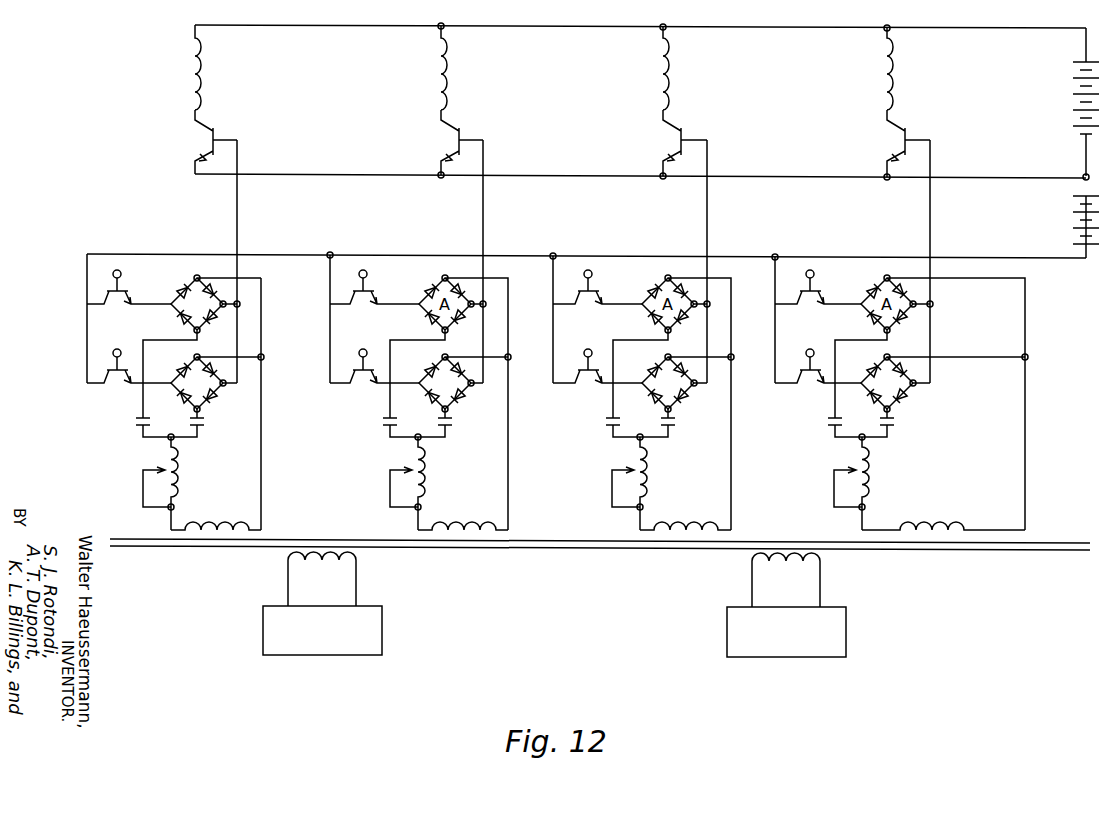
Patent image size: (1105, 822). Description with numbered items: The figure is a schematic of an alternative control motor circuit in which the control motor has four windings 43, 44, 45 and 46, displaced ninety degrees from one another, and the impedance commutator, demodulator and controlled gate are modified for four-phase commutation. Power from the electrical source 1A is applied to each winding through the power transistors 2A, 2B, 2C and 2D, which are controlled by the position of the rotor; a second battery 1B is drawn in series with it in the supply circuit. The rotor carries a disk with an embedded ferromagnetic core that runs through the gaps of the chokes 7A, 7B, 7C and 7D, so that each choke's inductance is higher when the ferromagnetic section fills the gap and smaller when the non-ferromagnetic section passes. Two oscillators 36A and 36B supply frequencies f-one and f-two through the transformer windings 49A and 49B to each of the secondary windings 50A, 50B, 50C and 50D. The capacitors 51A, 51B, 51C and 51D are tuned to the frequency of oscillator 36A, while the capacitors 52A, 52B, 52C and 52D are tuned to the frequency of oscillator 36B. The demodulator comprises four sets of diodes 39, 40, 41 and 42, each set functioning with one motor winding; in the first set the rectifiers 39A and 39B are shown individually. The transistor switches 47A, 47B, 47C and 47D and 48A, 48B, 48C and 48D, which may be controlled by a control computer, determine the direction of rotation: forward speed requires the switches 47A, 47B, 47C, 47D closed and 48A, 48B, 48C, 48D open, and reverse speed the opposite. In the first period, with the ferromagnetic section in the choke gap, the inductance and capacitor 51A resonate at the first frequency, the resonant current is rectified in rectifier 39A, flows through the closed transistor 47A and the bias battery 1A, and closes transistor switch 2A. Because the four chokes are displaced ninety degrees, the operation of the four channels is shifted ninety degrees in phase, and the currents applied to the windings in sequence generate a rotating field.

The bias battery 1A is at (1062, 224).
The battery 1B is at (1062, 102).
The power transistor 2A is at (199, 145).
The power transistor 2B is at (445, 145).
The power transistor 2C is at (667, 145).
The power transistor 2D is at (891, 145).
The winding 43 is at (203, 82).
The winding 44 is at (449, 82).
The winding 45 is at (671, 82).
The winding 46 is at (895, 82).
The transistor switch 47A is at (136, 285).
The transistor switch 47B is at (382, 285).
The transistor switch 47C is at (607, 285).
The transistor switch 47D is at (829, 285).
The transistor switch 48A is at (121, 393).
The transistor switch 48B is at (367, 393).
The transistor switch 48C is at (592, 393).
The transistor switch 48D is at (814, 393).
The rectifier 39A is at (178, 326).
The set of diodes 39 is at (228, 366).
The rectifier 39B is at (226, 400).
The set of diodes 40 is at (476, 366).
The set of diodes 41 is at (699, 366).
The set of diodes 42 is at (918, 366).
The capacitor 51A is at (135, 428).
The capacitor 51B is at (382, 428).
The capacitor 51C is at (605, 428).
The capacitor 51D is at (827, 428).
The capacitor 52A is at (205, 428).
The capacitor 52B is at (452, 428).
The capacitor 52C is at (675, 428).
The capacitor 52D is at (894, 428).
The choke 7A is at (178, 482).
The choke 7B is at (425, 482).
The choke 7C is at (647, 482).
The choke 7D is at (869, 482).
The secondary winding 50A is at (212, 522).
The secondary winding 50B is at (459, 522).
The secondary winding 50C is at (681, 522).
The secondary winding 50D is at (938, 522).
The transformer winding 49A is at (323, 566).
The transformer winding 49B is at (785, 567).
The oscillator 36A is at (322, 630).
The oscillator 36B is at (786, 632).